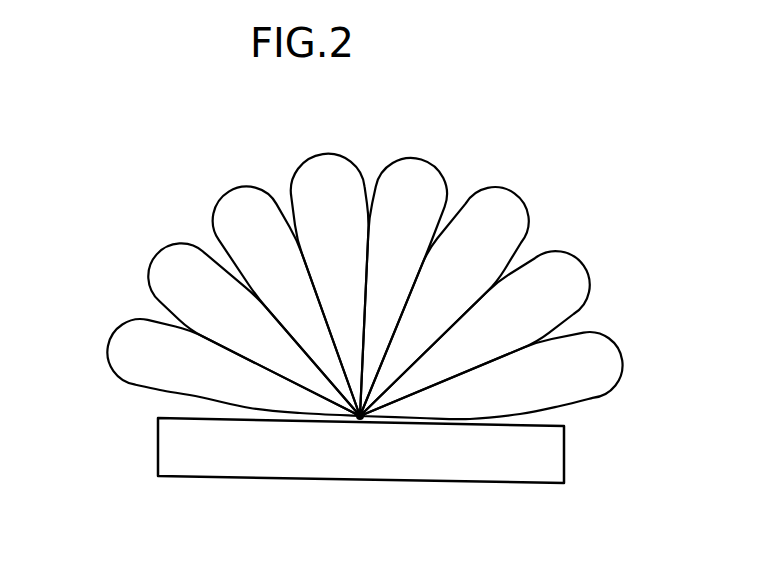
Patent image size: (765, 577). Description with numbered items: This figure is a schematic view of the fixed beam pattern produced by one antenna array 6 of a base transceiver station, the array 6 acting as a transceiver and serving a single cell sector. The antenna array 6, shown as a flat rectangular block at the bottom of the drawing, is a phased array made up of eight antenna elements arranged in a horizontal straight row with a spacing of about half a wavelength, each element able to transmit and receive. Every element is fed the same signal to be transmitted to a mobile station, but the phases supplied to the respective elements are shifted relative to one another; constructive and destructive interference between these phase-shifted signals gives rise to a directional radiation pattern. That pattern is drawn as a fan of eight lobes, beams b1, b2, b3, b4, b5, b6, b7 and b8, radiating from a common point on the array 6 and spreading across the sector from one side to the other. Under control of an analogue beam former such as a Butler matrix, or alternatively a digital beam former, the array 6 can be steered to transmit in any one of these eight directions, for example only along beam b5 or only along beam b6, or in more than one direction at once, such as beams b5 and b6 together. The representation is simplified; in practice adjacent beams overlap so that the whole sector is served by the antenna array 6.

The beam b1 is at (135, 349).
The beam b2 is at (169, 272).
The beam b3 is at (222, 206).
The beam b4 is at (319, 168).
The beam b5 is at (419, 172).
The beam b6 is at (510, 214).
The beam b7 is at (567, 285).
The beam b8 is at (598, 362).
The antenna array 6 is at (372, 452).